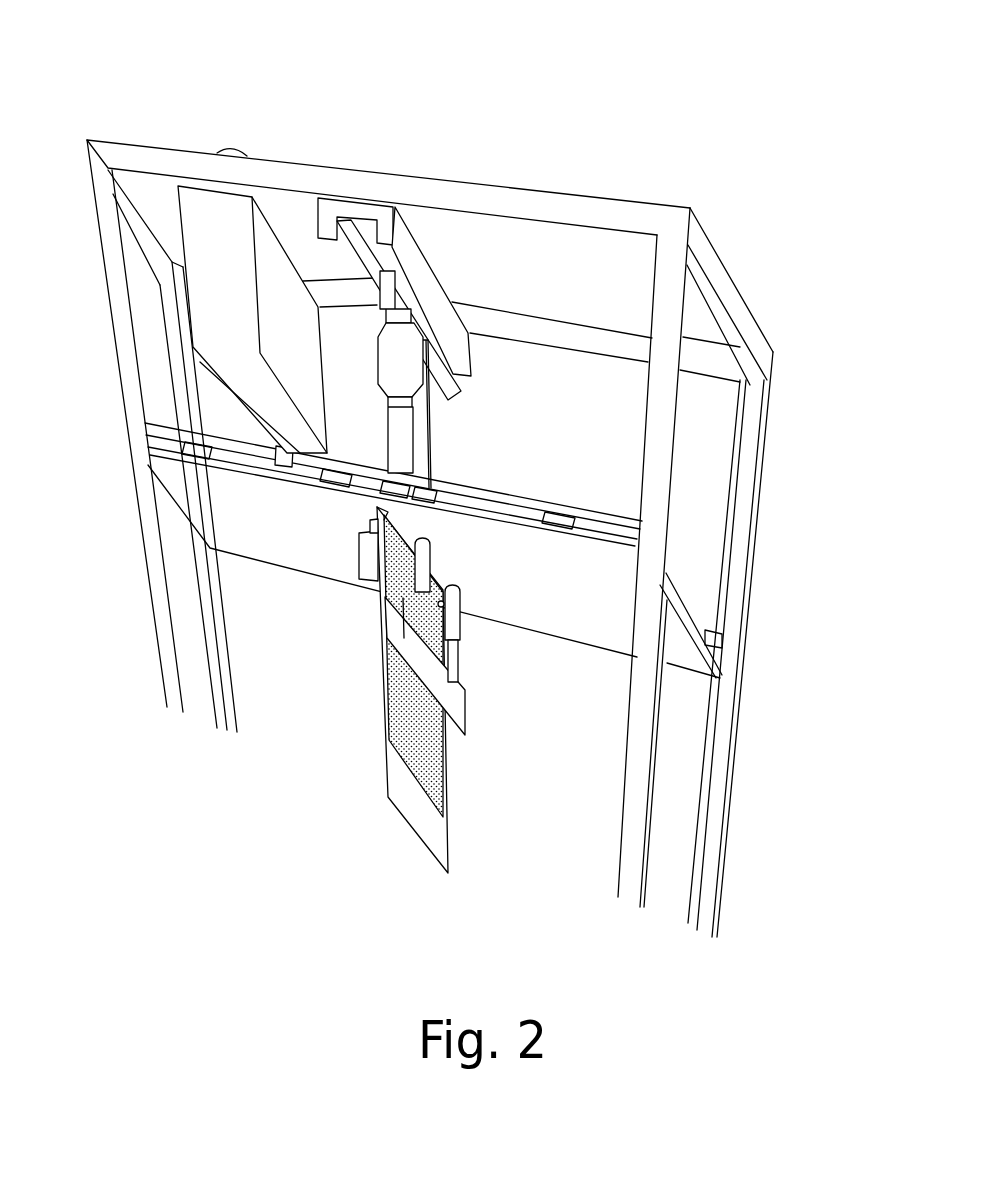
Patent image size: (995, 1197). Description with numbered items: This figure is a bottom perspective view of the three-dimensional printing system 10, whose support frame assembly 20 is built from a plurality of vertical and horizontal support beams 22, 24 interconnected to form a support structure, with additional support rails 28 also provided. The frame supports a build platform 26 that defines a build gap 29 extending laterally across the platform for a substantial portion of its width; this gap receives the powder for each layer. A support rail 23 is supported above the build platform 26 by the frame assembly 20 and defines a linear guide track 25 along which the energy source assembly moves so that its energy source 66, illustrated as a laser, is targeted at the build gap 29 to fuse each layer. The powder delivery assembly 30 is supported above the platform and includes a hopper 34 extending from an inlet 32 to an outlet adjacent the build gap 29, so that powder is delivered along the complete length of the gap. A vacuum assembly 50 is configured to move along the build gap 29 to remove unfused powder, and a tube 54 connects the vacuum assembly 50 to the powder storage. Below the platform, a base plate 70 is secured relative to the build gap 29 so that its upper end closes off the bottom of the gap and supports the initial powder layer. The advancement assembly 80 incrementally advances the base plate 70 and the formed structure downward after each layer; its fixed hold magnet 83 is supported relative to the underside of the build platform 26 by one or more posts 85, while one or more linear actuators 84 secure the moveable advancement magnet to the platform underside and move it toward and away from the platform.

The 3D printing system 10 is at (640, 104).
The support frame assembly 20 is at (736, 252).
The vertical support beams 22 is at (668, 432).
The support rail 23 is at (365, 207).
The horizontal support beams 24 is at (603, 207).
The linear guide track 25 is at (346, 218).
The build platform 26 is at (680, 637).
The support rails 28 is at (600, 517).
The build gap 29 is at (395, 515).
The powder delivery assembly 30 is at (216, 228).
The inlet 32 is at (243, 152).
The hopper 34 is at (260, 392).
The vacuum assembly 50 is at (441, 446).
The tube 54 is at (462, 394).
The energy source 66 is at (376, 369).
The base plate 70 is at (446, 838).
The advancement assembly 80 is at (376, 626).
The hold magnet 83 is at (365, 560).
The linear actuators 84 is at (430, 561).
The posts 85 is at (370, 526).